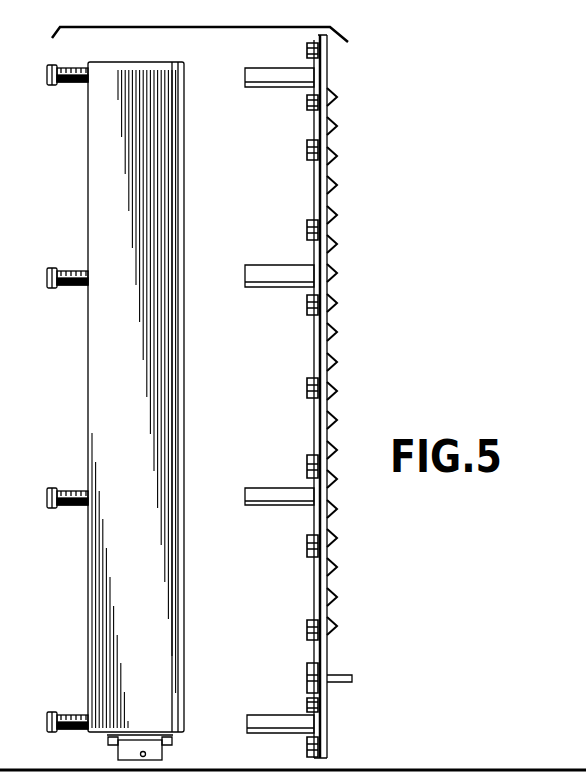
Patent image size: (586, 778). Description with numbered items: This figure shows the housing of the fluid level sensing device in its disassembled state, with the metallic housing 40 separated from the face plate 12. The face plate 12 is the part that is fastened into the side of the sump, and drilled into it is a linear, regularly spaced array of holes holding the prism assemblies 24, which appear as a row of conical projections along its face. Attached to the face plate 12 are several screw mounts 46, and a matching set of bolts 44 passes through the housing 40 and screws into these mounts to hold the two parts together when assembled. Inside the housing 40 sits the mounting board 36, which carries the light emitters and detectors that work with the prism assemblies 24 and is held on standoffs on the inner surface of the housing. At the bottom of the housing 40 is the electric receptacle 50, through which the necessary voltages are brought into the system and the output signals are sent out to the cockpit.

The face plate 12 is at (332, 320).
The prism assemblies 24 is at (335, 90).
The mounting board 36 is at (315, 438).
The metallic housing 40 is at (98, 395).
The bolts 44 is at (50, 86).
The screw mounts 46 is at (278, 89).
The electric receptacle 50 is at (163, 756).